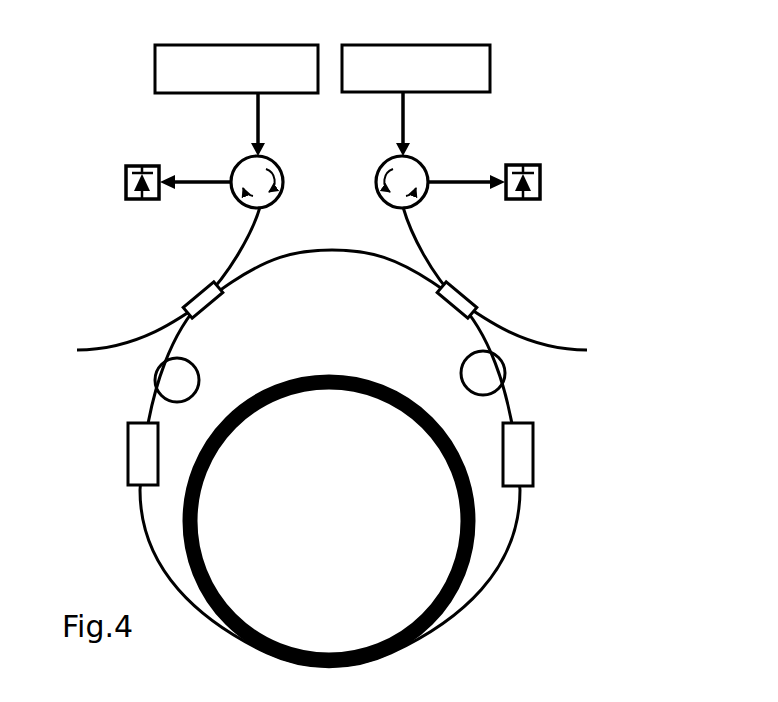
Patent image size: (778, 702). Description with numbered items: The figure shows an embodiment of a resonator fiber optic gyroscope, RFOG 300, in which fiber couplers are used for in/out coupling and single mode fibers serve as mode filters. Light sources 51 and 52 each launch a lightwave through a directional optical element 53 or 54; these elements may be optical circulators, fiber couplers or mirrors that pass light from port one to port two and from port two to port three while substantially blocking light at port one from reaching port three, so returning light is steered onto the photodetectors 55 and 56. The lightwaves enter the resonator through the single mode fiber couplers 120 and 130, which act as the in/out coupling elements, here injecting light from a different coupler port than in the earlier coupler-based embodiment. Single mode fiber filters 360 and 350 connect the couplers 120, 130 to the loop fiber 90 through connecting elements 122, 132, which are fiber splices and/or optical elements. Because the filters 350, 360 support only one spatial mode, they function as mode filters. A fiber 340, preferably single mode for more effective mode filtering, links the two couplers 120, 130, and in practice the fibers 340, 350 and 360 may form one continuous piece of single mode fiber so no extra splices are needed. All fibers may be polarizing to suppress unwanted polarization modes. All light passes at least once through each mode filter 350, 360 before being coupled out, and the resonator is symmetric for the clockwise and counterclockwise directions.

The RFOG 300 is at (645, 78).
The light source 51 is at (490, 61).
The light source 52 is at (155, 65).
The directional optical element 53 is at (385, 160).
The directional optical element 54 is at (275, 163).
The photodetector 55 is at (542, 172).
The photodetector 56 is at (125, 168).
The fiber loop 90 is at (393, 405).
The fiber coupler 120 is at (195, 290).
The fiber coupler 130 is at (470, 292).
The connecting element 122 is at (127, 450).
The connecting element 132 is at (533, 447).
The fiber 340 is at (340, 253).
The single mode fiber filter 350 is at (463, 360).
The single mode fiber filter 360 is at (197, 365).